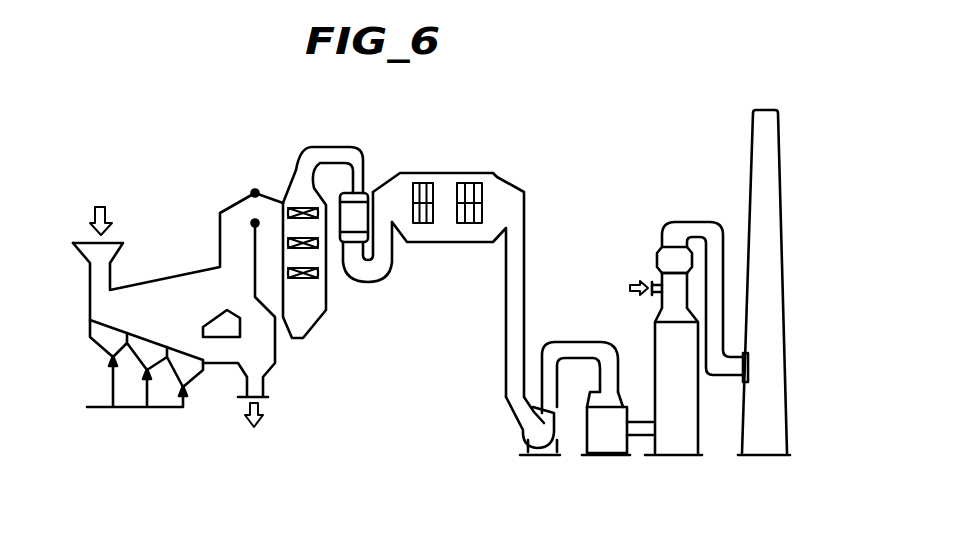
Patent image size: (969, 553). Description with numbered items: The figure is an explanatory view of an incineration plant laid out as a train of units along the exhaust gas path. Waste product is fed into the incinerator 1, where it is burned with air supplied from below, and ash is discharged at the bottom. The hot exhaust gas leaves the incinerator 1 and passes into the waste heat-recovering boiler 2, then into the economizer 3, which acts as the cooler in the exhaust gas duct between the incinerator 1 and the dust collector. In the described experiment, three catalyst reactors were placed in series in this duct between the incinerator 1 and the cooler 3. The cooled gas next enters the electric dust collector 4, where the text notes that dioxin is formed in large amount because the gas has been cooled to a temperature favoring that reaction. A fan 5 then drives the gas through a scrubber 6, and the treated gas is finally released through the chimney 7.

The incinerator 1 is at (178, 290).
The waste heat-recovering boiler 2 is at (271, 243).
The economizer 3 is at (358, 213).
The electric dust collector 4 is at (443, 225).
The fan 5 is at (527, 443).
The scrubber 6 is at (653, 343).
The chimney 7 is at (762, 395).